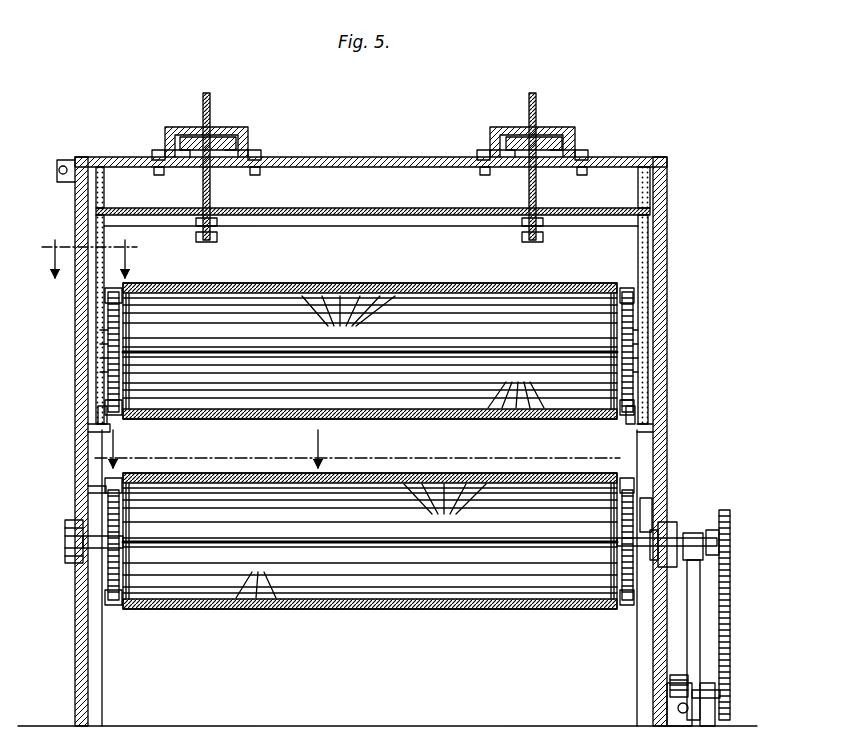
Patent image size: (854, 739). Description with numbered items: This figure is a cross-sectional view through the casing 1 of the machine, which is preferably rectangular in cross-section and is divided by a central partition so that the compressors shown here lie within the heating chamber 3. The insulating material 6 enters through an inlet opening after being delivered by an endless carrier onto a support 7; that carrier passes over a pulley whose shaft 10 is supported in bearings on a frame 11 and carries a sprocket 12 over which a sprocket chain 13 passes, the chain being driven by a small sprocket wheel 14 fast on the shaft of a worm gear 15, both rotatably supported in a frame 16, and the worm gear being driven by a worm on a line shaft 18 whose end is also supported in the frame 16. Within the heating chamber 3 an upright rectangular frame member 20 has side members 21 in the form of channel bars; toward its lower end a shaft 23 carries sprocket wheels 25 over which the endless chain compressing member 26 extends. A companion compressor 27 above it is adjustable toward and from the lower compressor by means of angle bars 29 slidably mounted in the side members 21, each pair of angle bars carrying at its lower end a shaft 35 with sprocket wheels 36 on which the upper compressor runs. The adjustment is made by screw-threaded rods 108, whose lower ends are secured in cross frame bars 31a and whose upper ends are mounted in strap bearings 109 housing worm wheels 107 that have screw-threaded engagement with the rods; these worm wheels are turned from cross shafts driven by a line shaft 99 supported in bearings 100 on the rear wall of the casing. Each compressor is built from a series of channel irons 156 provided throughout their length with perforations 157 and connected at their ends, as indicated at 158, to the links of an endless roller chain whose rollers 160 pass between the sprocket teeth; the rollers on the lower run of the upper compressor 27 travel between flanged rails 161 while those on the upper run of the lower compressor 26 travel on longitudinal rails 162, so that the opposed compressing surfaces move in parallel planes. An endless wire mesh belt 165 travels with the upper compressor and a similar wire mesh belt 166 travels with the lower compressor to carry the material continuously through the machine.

The casing 1 is at (78, 638).
The heating chamber 3 is at (365, 192).
The insulating material 6 is at (357, 449).
The support 7 is at (88, 259).
The shaft 10 is at (708, 540).
The frame 11 is at (702, 606).
The sprocket 12 is at (729, 522).
The sprocket chain 13 is at (731, 634).
The small sprocket wheel 14 is at (735, 690).
The worm gear 15 is at (684, 674).
The frame 16 is at (676, 716).
The line shaft 18 is at (668, 695).
The frame member 20 is at (662, 318).
The side members 21 is at (96, 194).
The shaft 23 is at (146, 550).
The sprocket wheels 25 is at (126, 516).
The endless chain compressing member 26 is at (432, 474).
The companion compressor 27 is at (432, 283).
The angle bars 29 is at (104, 245).
The cross frame bars 31a is at (340, 227).
The shaft 35 is at (452, 350).
The sprocket wheels 36 is at (106, 326).
The line shaft 99 is at (56, 168).
The bearings 100 is at (75, 157).
The worm wheels 107 is at (236, 136).
The screw-threaded rod 108 is at (204, 93).
The strap bearings 109 is at (166, 128).
The channel irons 156 is at (276, 292).
The perforations 157 is at (390, 447).
The connection 158 is at (128, 300).
The rollers 160 is at (120, 294).
The flanged rails 161 is at (99, 410).
The longitudinal rails 162 is at (84, 520).
The endless wire mesh belt 165 is at (530, 283).
The wire mesh belt 166 is at (370, 474).